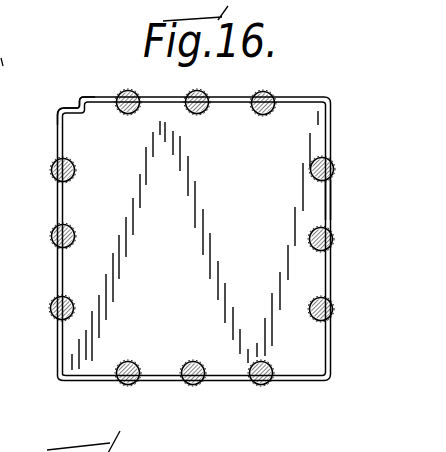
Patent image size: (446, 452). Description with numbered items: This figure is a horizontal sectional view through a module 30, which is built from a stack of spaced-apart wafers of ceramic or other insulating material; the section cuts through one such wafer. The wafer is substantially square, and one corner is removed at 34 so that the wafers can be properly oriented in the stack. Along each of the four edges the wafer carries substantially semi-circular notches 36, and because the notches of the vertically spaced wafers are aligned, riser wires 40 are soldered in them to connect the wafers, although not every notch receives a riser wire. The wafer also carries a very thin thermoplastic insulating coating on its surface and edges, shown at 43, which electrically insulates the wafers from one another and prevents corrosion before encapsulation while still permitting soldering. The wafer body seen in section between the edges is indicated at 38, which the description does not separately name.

The module 30 is at (303, 386).
The removed corner 34 is at (73, 108).
The semi-circular notches 36 is at (311, 232).
The glass pane 38 is at (85, 362).
The riser wires 40 is at (128, 382).
The insulating coating 43 is at (333, 201).